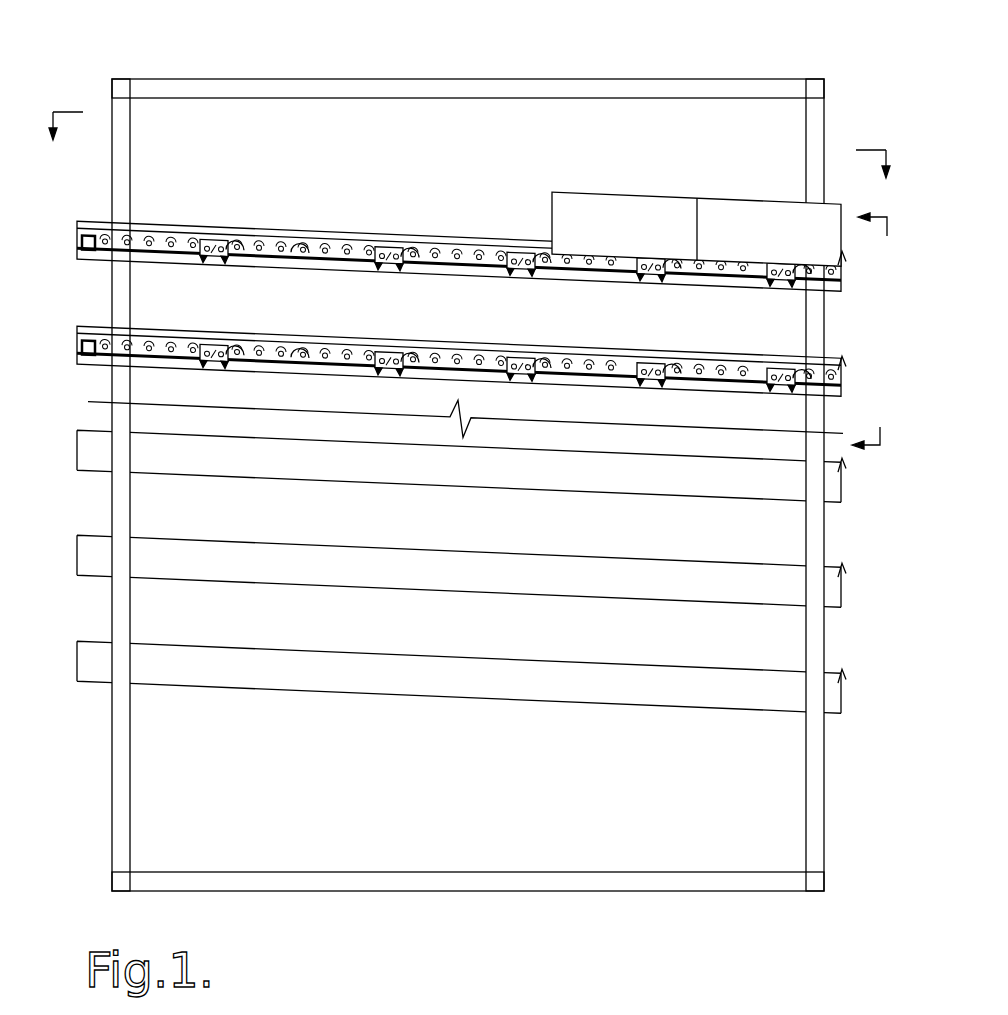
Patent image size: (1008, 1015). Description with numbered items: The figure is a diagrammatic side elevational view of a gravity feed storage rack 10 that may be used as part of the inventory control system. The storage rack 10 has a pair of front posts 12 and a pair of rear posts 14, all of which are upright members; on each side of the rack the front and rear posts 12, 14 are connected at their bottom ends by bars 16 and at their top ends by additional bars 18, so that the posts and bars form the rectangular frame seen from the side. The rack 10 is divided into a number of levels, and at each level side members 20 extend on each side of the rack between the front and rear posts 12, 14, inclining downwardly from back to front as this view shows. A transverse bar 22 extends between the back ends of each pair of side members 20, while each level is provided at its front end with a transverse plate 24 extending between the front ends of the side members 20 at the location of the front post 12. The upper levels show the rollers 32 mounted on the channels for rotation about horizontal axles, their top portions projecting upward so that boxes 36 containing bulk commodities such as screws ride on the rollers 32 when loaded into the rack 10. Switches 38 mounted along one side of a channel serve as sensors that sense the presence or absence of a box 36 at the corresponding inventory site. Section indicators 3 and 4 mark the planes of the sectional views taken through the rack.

The gravity feed storage rack 10 is at (252, 62).
The front posts 12 is at (824, 796).
The rear posts 14 is at (133, 768).
The bars 16 is at (332, 882).
The additional bars 18 is at (420, 90).
The side members 20 is at (292, 268).
The transverse bar 22 is at (80, 247).
The transverse plate 24 is at (843, 283).
The rollers 32 is at (228, 240).
The boxes 36 is at (613, 200).
The switches 38 is at (212, 258).
The section line 3- 3 is at (885, 335).
The section line 4- 4 is at (471, 123).